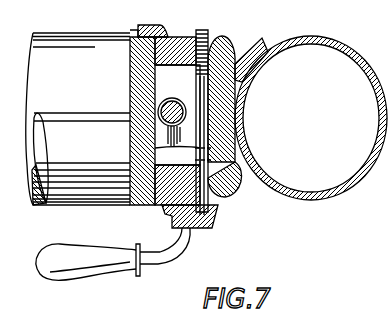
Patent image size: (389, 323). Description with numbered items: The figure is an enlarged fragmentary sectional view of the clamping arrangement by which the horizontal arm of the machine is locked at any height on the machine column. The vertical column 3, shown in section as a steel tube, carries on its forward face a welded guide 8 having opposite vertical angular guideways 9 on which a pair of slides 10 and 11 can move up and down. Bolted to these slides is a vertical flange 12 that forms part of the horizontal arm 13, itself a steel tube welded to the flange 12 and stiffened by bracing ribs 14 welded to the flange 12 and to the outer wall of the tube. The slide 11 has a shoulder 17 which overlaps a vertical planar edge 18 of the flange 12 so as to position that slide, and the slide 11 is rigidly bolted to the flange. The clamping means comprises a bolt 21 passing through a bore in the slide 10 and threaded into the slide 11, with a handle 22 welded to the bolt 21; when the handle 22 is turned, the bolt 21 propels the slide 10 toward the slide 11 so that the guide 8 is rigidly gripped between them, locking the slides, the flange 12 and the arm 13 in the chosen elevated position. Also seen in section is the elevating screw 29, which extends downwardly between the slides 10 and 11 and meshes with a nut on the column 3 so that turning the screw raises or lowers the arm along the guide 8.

The vertical column 3 is at (368, 97).
The guide 8 is at (236, 62).
The vertical angular guideways 9 is at (222, 44).
The slide 10 is at (165, 210).
The slide 11 is at (177, 46).
The vertical flange 12 is at (134, 73).
The horizontal arm 13 is at (78, 119).
The bracing ribs 14 is at (78, 120).
The shoulder 17 is at (152, 25).
The vertical planar edge 18 is at (133, 34).
The bolt 21 is at (201, 29).
The handle 22 is at (76, 252).
The elevating screw 29 is at (173, 104).